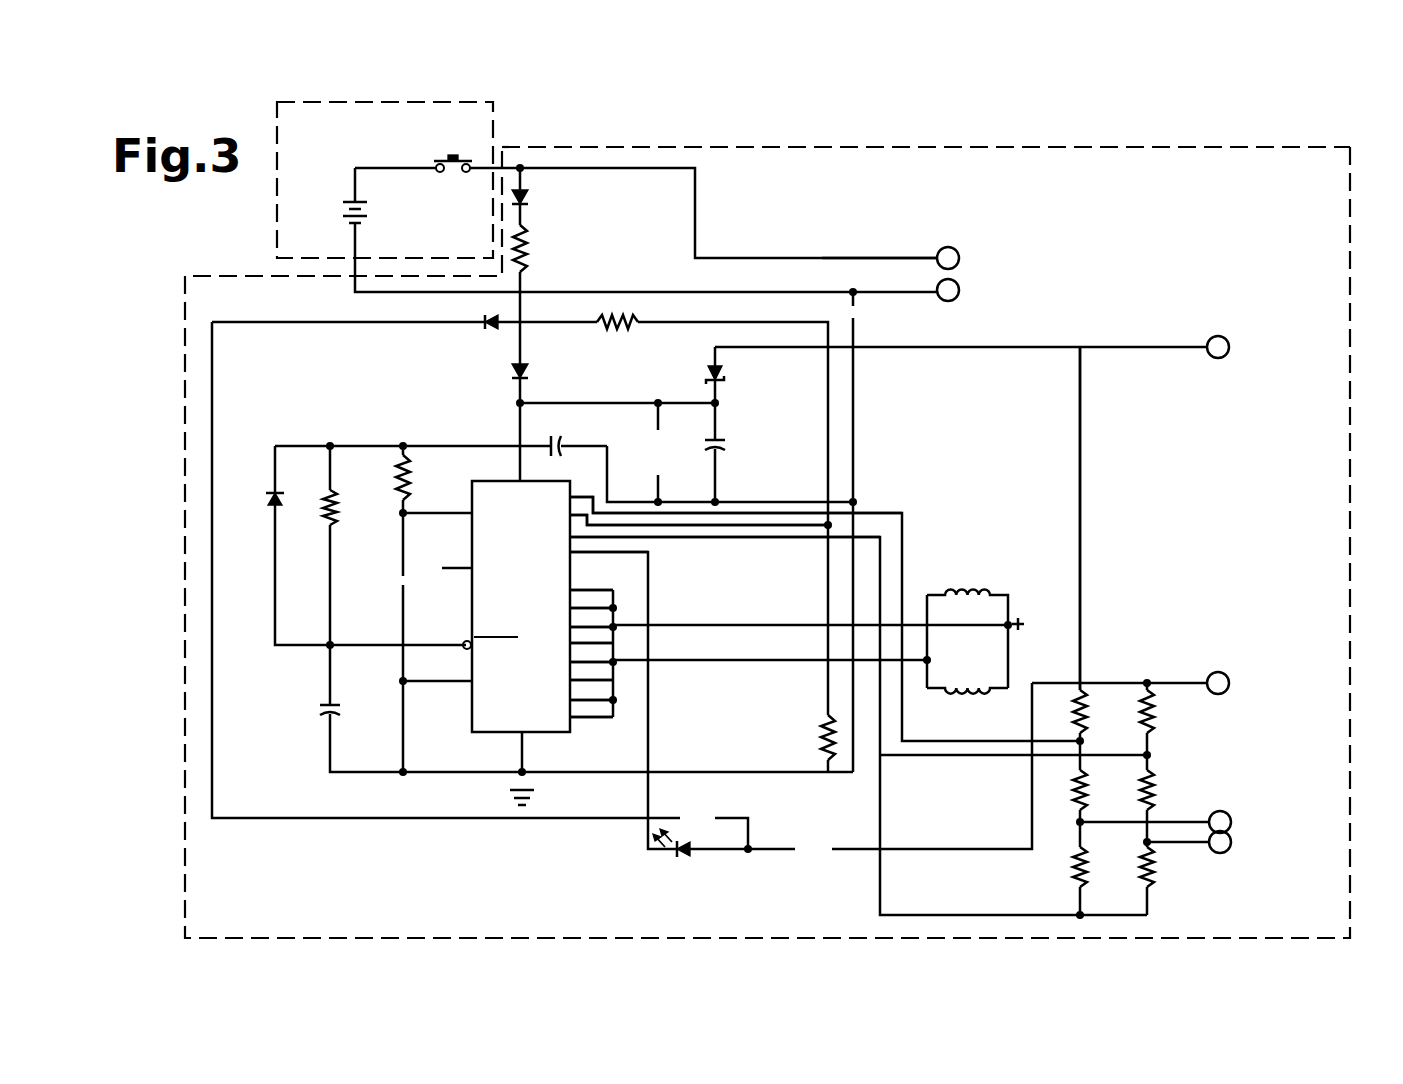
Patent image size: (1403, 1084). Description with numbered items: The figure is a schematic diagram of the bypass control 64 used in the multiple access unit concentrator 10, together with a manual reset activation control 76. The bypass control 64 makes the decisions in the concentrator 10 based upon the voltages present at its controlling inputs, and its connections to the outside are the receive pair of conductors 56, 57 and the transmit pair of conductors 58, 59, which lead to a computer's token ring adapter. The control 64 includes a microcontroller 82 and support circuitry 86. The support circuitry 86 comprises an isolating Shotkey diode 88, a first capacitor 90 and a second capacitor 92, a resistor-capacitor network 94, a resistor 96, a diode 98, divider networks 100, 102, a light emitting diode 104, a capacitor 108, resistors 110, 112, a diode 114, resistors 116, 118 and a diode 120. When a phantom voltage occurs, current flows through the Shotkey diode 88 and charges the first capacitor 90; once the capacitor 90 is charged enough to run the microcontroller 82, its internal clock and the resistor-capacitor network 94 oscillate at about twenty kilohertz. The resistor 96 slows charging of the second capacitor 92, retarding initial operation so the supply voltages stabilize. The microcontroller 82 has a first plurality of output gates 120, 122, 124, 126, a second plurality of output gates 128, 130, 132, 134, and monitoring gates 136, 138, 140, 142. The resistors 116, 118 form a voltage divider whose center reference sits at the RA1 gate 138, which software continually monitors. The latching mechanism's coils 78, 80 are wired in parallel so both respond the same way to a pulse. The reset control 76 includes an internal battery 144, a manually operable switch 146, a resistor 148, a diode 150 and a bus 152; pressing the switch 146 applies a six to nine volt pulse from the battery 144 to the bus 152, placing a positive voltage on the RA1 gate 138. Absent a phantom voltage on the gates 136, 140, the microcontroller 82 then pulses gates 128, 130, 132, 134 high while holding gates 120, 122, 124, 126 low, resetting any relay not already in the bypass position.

The multiple access unit concentrator 10 is at (1268, 120).
The receive pair conductor 56 is at (1223, 811).
The receive pair conductor 57 is at (1228, 852).
The transmit pair conductor 58 is at (1226, 338).
The transmit pair conductor 59 is at (1226, 674).
The bypass control 64 is at (868, 147).
The manual reset activation control 76 is at (474, 104).
The coil 78 is at (968, 594).
The coil 80 is at (968, 690).
The microcontroller 82 is at (490, 481).
The support circuitry 86 is at (1034, 312).
The isolating Shotkey diode 88 is at (726, 377).
The first capacitor 90 is at (727, 446).
The second capacitor 92 is at (344, 706).
The resistor-capacitor network 94 is at (392, 498).
The resistor 96 is at (328, 508).
The diode 98 is at (270, 500).
The divider network 100 is at (1091, 746).
The divider network 102 is at (1163, 770).
The light emitting diode 104 is at (680, 858).
The capacitor 108 is at (568, 446).
The resistor 110 is at (1074, 868).
The resistor 112 is at (1152, 868).
The diode 114 is at (530, 372).
The resistor 116 is at (633, 326).
The resistor 118 is at (822, 734).
The diode / RB0 output gate 120 is at (486, 330).
The RB1 output gate 122 is at (585, 608).
The RB2 output gate 124 is at (585, 627).
The RB3 output gate 126 is at (585, 643).
The RB4 output gate 128 is at (585, 662).
The RB5 output gate 130 is at (585, 680).
The RB6 output gate 132 is at (585, 700).
The RB7 output gate 134 is at (578, 717).
The RA0 monitoring gate 136 is at (574, 497).
The RA1 monitoring gate 138 is at (590, 512).
The RA2 monitoring gate 140 is at (630, 538).
The RA3 monitoring gate 142 is at (575, 553).
The internal battery 144 is at (366, 210).
The switch 146 is at (442, 158).
The resistor 148 is at (530, 262).
The diode 150 is at (530, 200).
The bus 152 is at (822, 258).